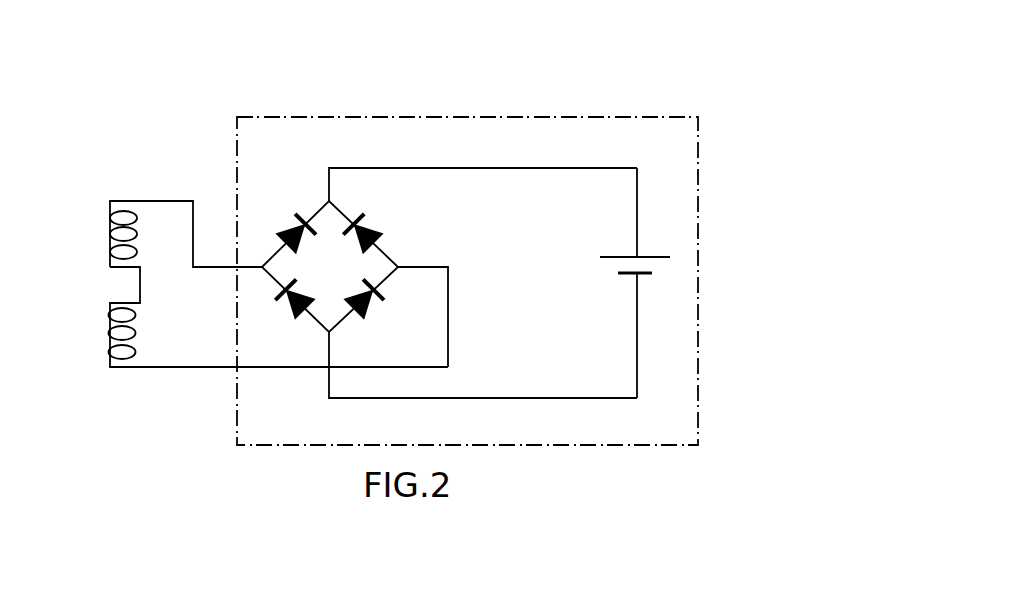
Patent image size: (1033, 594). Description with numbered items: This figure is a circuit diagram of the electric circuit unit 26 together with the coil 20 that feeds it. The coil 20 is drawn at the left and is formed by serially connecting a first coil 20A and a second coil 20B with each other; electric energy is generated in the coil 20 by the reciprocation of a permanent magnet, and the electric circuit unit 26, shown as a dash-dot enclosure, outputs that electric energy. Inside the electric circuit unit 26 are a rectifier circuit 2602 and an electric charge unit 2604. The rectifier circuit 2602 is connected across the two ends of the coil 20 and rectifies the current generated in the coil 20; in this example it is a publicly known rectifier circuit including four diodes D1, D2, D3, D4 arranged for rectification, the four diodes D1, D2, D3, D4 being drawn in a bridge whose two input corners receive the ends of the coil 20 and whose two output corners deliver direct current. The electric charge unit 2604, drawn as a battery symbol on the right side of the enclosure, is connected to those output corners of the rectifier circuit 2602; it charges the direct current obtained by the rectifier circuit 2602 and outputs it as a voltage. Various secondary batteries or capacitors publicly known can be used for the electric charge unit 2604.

The coil 20 is at (250, 273).
The first coil 20A is at (107, 247).
The second coil 20B is at (108, 348).
The electric circuit unit 26 is at (630, 115).
The rectifier circuit 2602 is at (442, 232).
The electric charge unit 2604 is at (647, 257).
The diode D1 is at (283, 232).
The diode D2 is at (373, 227).
The diode D3 is at (283, 307).
The diode D4 is at (372, 312).